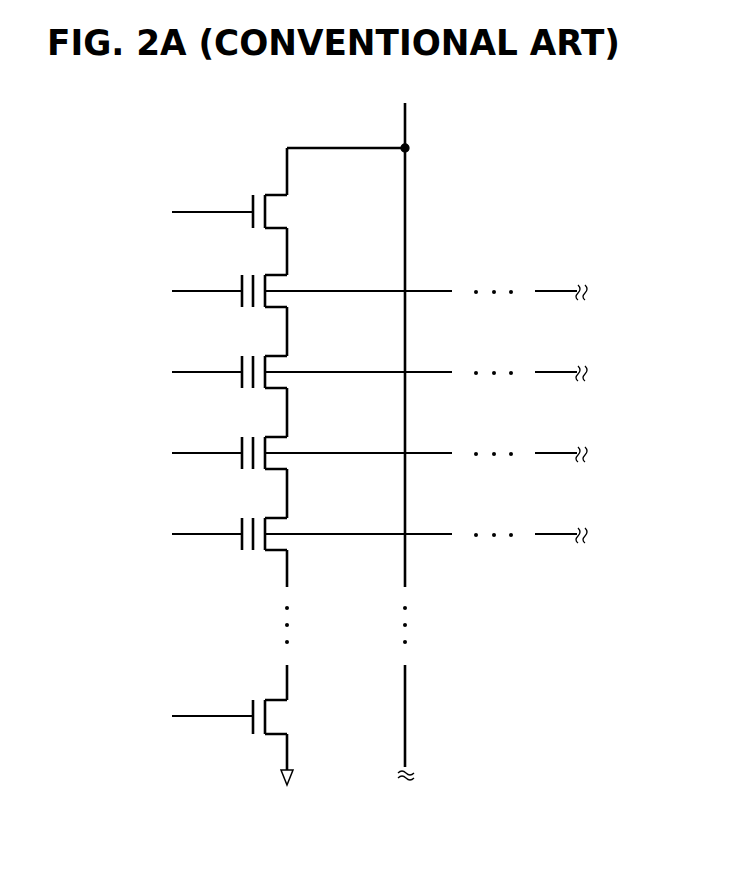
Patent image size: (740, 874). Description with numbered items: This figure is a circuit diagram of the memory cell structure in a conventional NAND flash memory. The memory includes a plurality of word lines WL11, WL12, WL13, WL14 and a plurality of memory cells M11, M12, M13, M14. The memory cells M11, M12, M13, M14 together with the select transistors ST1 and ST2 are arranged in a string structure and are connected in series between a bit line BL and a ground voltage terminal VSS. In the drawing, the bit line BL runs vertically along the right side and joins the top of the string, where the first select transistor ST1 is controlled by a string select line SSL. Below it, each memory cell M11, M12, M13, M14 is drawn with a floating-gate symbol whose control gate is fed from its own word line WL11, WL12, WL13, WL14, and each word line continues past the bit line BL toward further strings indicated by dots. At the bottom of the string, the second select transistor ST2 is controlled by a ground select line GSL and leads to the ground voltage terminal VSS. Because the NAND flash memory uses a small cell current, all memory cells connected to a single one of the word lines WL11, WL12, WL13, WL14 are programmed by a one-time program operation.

The bit line BL is at (407, 125).
The string select line SSL is at (186, 213).
The select transistor ST1 is at (282, 212).
The word line WL11 is at (342, 292).
The memory cell M11 is at (282, 282).
The word line WL12 is at (342, 373).
The memory cell M12 is at (282, 363).
The word line WL13 is at (342, 454).
The memory cell M13 is at (282, 444).
The word line WL14 is at (342, 535).
The memory cell M14 is at (282, 525).
The ground select line GSL is at (185, 717).
The select transistor ST2 is at (282, 716).
The ground voltage terminal VSS is at (286, 792).